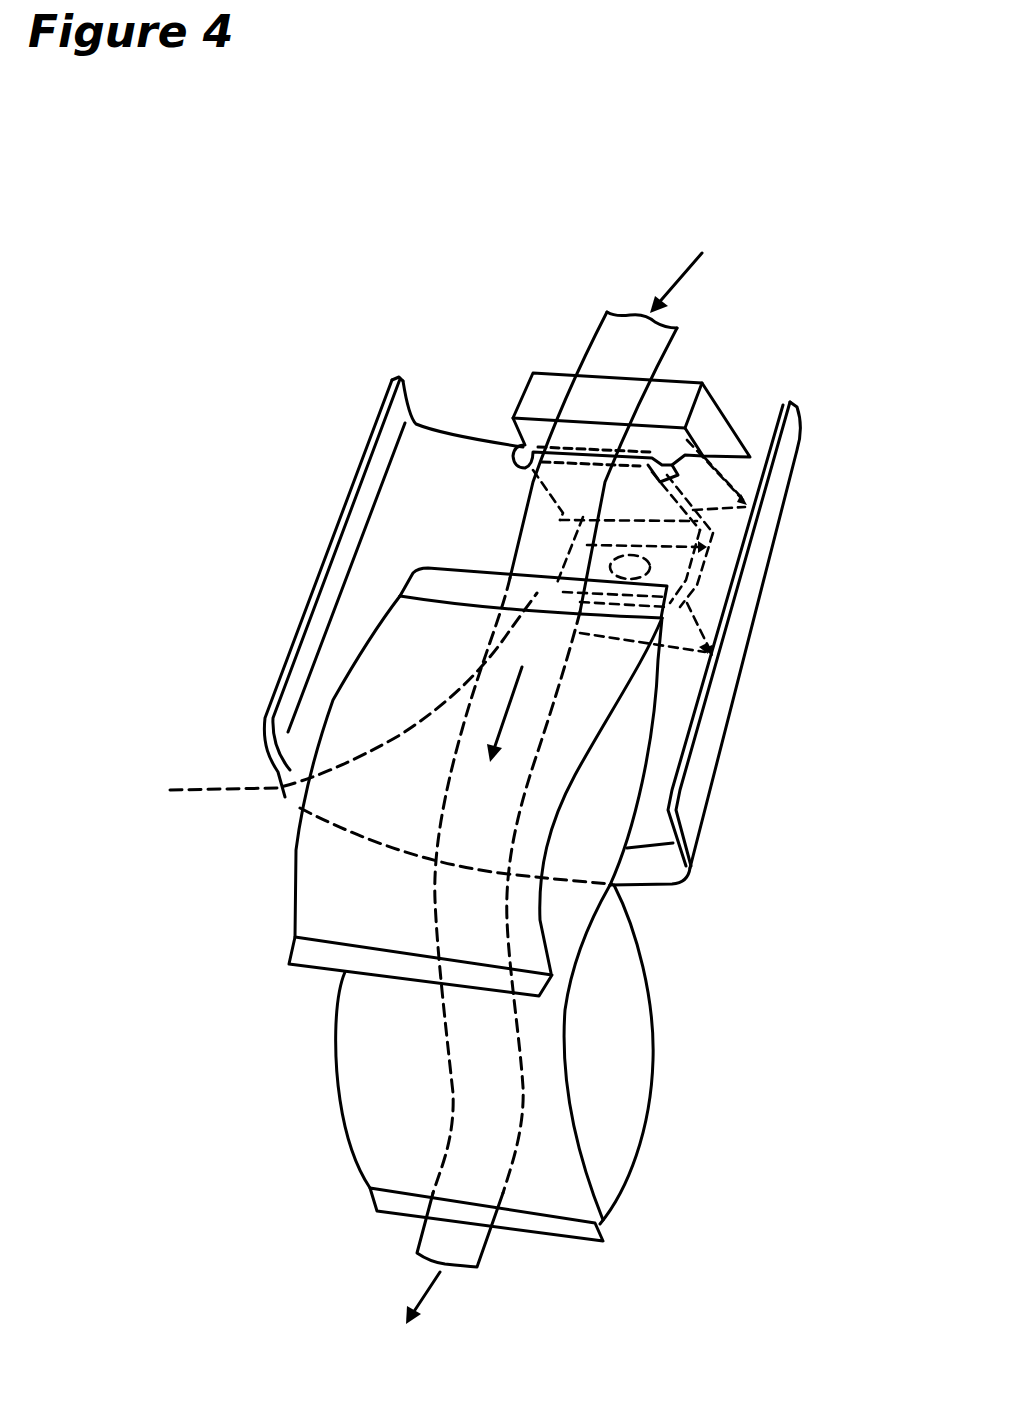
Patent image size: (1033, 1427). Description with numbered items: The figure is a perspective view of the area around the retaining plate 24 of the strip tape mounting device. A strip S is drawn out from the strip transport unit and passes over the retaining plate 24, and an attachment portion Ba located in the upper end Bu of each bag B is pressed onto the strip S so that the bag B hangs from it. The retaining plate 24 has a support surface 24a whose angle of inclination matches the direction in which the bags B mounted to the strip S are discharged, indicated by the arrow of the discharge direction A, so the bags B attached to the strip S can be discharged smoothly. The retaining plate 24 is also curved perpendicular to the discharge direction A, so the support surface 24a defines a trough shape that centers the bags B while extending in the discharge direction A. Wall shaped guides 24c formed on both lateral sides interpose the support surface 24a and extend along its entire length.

The retaining plate 24 is at (533, 609).
The support surface 24a is at (500, 540).
The wall shaped guides 24c is at (327, 607).
The upper end Bu is at (440, 583).
The bag B is at (294, 873).
The attachment portion Ba is at (317, 700).
The strip S is at (590, 352).
The discharge direction A is at (499, 737).